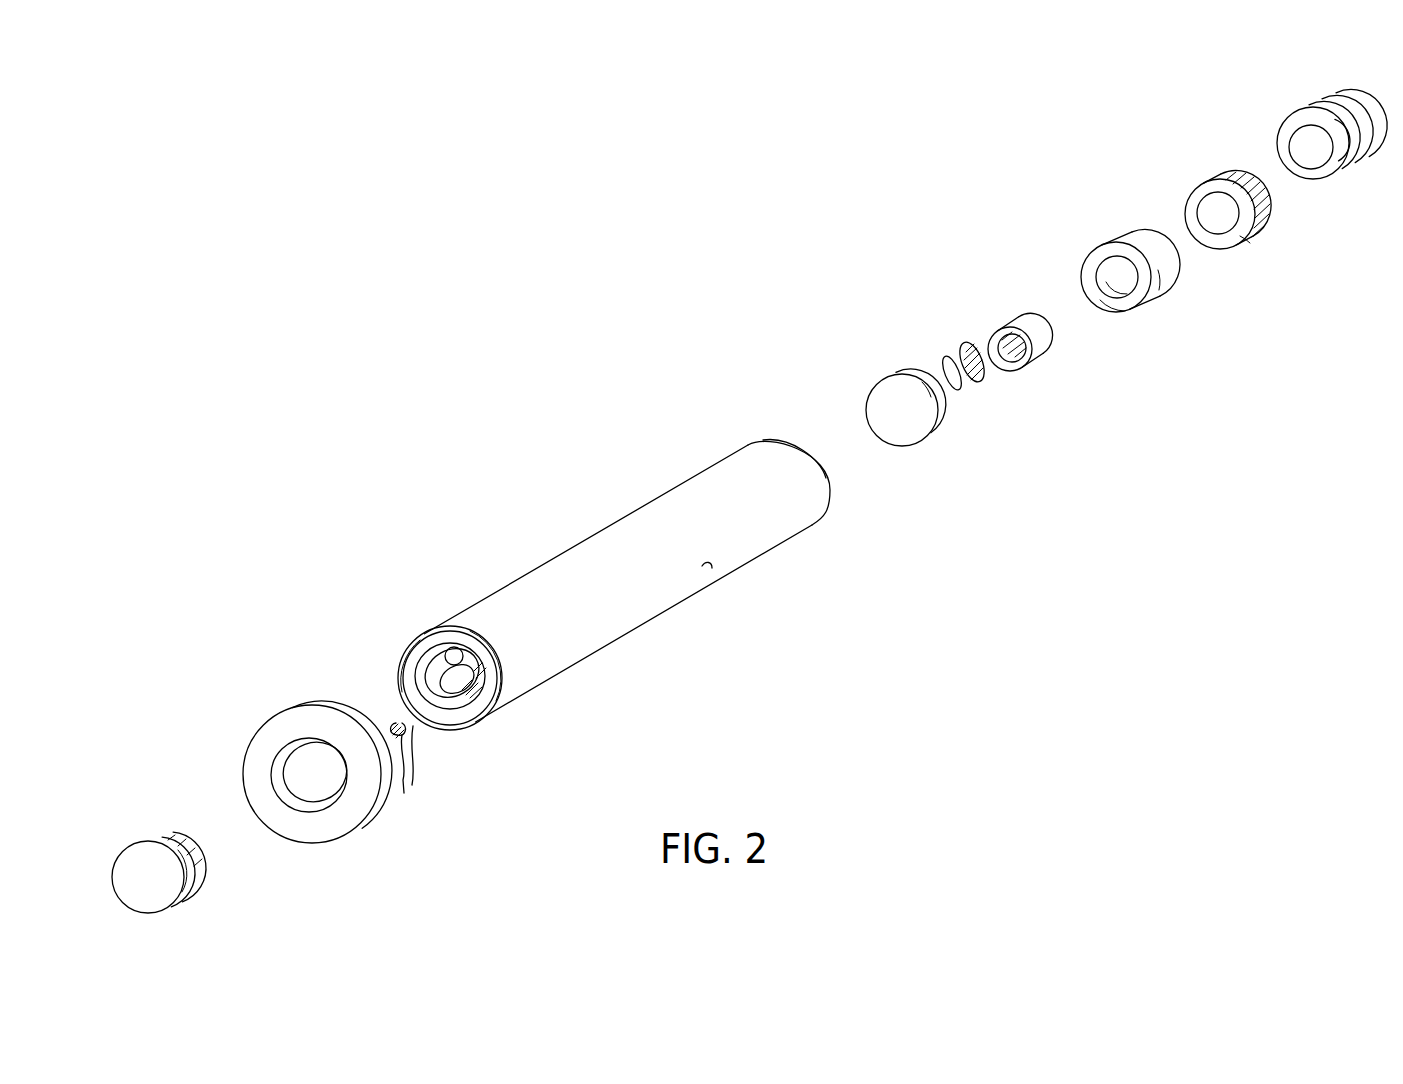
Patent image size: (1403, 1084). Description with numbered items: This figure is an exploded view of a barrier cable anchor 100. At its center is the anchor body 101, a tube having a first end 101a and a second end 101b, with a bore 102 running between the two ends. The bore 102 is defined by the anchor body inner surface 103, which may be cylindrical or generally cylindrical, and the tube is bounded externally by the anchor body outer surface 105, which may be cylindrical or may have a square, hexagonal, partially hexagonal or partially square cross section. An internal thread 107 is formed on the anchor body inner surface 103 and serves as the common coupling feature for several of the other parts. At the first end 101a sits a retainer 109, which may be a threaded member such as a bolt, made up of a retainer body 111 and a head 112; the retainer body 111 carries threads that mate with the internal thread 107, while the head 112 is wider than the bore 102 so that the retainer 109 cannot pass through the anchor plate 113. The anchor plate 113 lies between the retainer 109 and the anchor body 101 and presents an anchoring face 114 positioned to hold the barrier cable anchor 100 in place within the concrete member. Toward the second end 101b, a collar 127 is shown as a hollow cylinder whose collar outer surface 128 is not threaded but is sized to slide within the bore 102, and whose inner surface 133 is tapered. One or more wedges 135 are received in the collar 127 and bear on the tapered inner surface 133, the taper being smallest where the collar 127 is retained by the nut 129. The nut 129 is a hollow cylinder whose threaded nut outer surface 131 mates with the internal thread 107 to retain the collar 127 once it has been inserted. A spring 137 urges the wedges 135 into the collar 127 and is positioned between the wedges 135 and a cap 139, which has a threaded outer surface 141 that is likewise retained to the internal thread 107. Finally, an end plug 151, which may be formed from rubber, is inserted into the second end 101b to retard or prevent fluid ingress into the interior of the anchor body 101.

The barrier cable anchor 100 is at (438, 407).
The anchor body 101 is at (568, 553).
The first end 101a is at (468, 620).
The second end 101b is at (783, 467).
The bore 102 is at (448, 640).
The anchor body inner surface 103 is at (435, 665).
The anchor body outer surface 105 is at (705, 567).
The internal thread 107 is at (392, 670).
The retainer 109 is at (154, 892).
The retainer body 111 is at (200, 867).
The head 112 is at (161, 840).
The anchor plate 113 is at (270, 728).
The anchoring face 114 is at (403, 753).
The collar 127 is at (1120, 237).
The collar outer surface 128 is at (1163, 280).
The nut 129 is at (1238, 248).
The nut outer surface 131 is at (1213, 180).
The inner surface 133 is at (1110, 310).
The wedges 135 is at (1033, 312).
The spring 137 is at (962, 348).
The cap 139 is at (888, 372).
The threaded outer surface 141 is at (950, 420).
The end plug 151 is at (1338, 80).